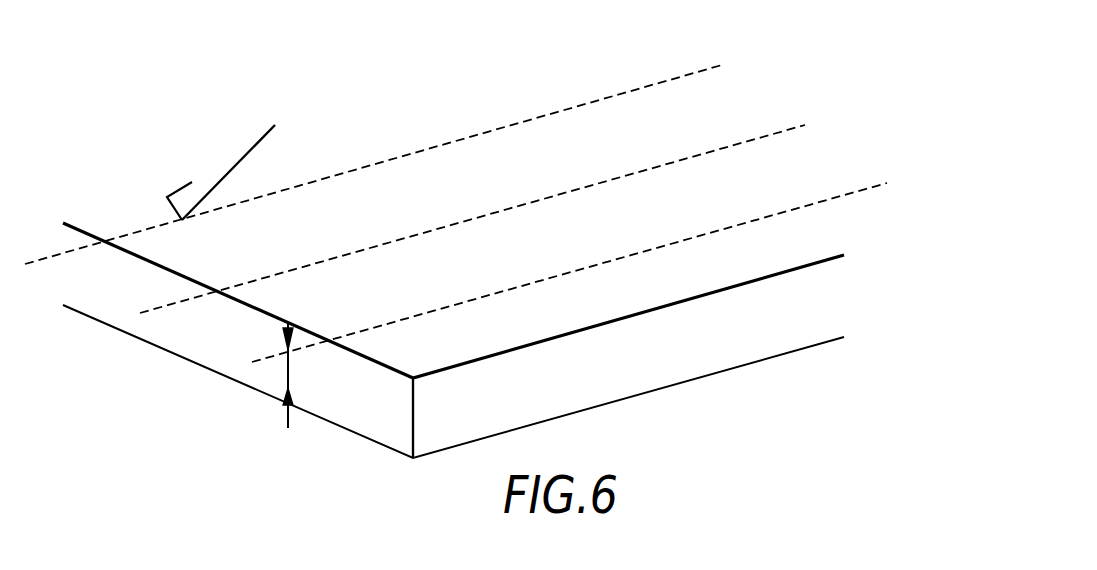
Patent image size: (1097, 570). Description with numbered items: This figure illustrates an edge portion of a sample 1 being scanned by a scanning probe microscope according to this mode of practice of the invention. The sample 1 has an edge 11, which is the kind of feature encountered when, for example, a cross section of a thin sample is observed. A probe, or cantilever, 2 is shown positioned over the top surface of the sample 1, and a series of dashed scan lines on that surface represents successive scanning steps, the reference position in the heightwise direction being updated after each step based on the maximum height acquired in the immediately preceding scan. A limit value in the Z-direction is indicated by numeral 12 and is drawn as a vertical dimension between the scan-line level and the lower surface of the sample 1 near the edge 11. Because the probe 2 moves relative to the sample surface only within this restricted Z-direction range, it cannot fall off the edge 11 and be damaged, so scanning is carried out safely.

The sample 1 is at (766, 338).
The edge 11 is at (414, 420).
The limit value in the Z-direction 12 is at (290, 367).
The probe 2 is at (238, 152).